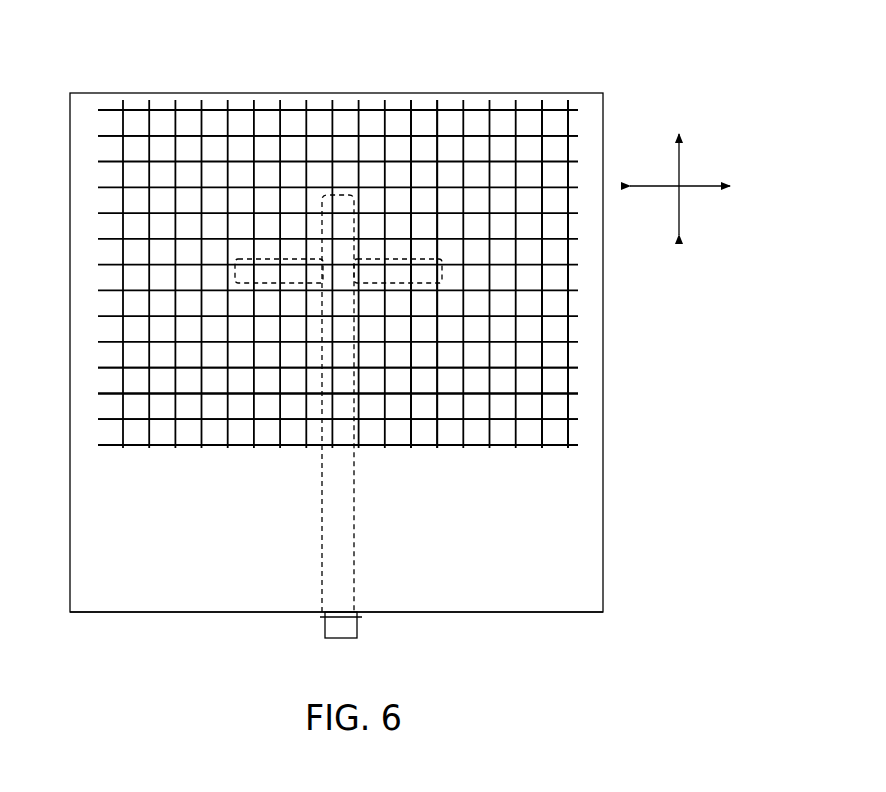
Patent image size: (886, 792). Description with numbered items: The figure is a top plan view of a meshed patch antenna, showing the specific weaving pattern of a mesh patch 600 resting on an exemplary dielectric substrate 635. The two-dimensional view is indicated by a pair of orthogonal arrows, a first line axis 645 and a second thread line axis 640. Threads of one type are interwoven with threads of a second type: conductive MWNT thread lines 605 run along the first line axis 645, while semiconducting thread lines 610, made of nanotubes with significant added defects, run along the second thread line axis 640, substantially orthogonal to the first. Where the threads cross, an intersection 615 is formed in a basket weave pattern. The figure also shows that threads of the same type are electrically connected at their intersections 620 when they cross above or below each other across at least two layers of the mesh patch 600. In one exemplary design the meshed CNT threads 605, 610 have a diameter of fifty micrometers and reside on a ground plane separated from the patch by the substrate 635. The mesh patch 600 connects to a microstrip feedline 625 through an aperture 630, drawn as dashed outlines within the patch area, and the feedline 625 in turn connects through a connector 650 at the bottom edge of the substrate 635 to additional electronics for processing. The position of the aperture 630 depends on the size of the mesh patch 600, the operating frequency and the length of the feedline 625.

The mesh patch 600 is at (119, 62).
The conductive MWNT thread lines 605 is at (476, 448).
The semiconducting thread lines 610 is at (437, 429).
The intersection 615 is at (544, 110).
The intersections of threads of the same type 620 is at (543, 392).
The microstrip feedline 625 is at (322, 522).
The aperture 630 is at (272, 284).
The substrate 635 is at (238, 594).
The second thread line axis 640 is at (682, 157).
The first line axis 645 is at (707, 188).
The connector 650 is at (358, 628).